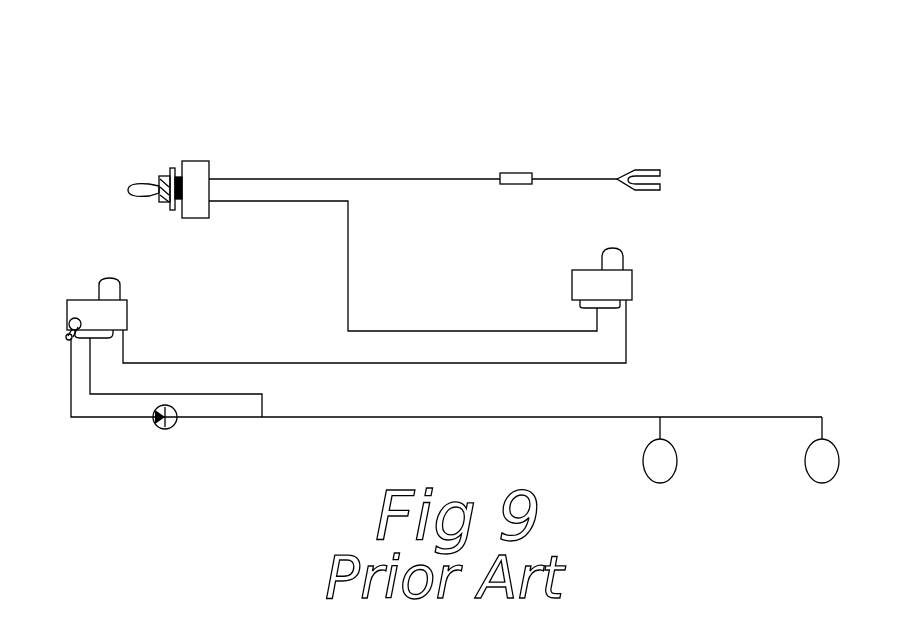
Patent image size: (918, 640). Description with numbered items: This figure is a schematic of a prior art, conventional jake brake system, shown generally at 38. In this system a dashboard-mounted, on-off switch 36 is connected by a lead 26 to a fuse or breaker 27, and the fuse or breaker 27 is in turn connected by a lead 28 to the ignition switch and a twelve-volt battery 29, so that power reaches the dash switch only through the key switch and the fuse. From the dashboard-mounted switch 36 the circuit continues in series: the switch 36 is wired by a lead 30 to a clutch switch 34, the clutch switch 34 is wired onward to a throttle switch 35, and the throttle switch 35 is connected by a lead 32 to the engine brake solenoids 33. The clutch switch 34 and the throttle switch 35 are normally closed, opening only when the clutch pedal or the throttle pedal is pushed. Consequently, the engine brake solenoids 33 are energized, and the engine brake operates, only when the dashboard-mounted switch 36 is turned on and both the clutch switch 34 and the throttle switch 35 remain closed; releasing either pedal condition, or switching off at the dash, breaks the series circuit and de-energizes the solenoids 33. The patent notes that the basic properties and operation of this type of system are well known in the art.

The conventional jake brake system 38 is at (374, 86).
The dashboard-mounted on-off switch 36 is at (195, 219).
The lead 26 is at (372, 178).
The fuse or breaker 27 is at (521, 186).
The lead 28 is at (560, 178).
The ignition switch and 12-volt battery 29 is at (656, 182).
The lead 30 is at (423, 331).
The clutch switch 34 is at (580, 292).
The lead 32 is at (425, 363).
The throttle switch 35 is at (87, 312).
The engine brake solenoids 33 is at (655, 466).